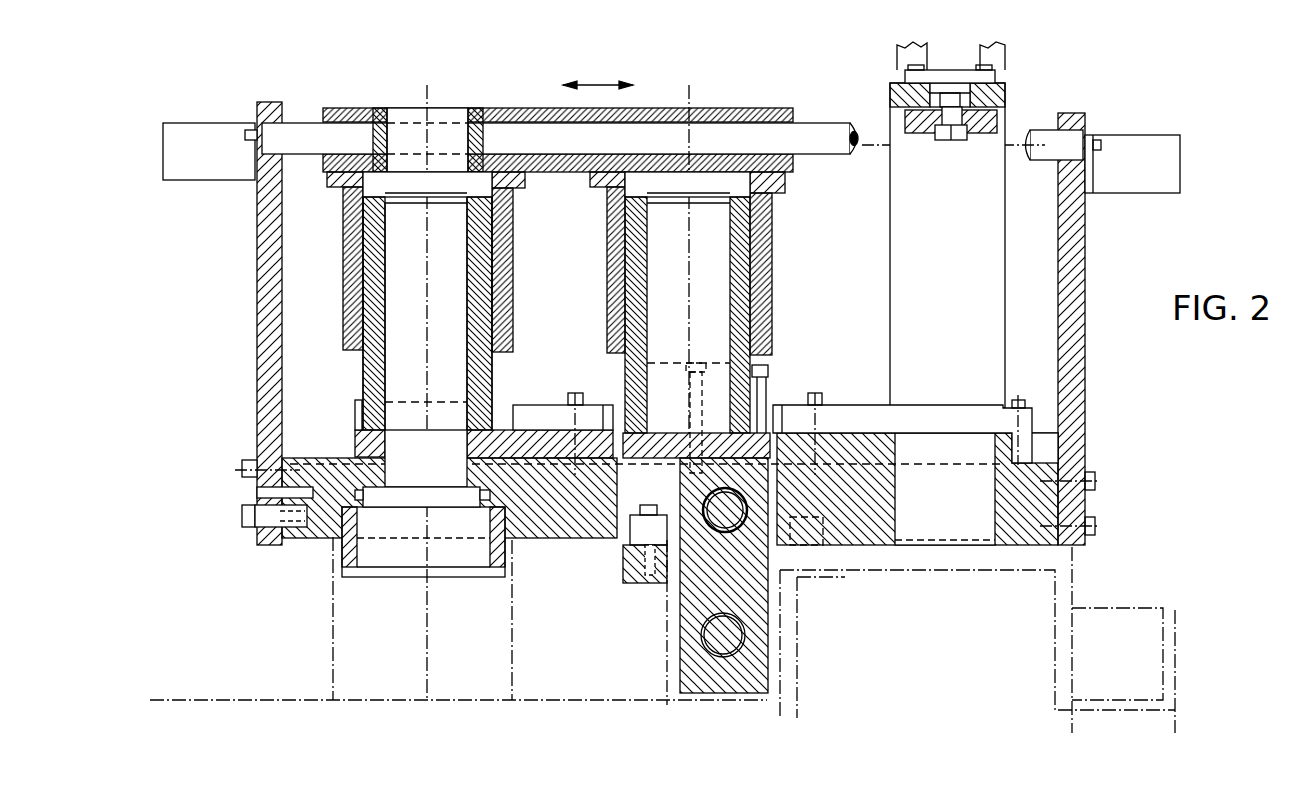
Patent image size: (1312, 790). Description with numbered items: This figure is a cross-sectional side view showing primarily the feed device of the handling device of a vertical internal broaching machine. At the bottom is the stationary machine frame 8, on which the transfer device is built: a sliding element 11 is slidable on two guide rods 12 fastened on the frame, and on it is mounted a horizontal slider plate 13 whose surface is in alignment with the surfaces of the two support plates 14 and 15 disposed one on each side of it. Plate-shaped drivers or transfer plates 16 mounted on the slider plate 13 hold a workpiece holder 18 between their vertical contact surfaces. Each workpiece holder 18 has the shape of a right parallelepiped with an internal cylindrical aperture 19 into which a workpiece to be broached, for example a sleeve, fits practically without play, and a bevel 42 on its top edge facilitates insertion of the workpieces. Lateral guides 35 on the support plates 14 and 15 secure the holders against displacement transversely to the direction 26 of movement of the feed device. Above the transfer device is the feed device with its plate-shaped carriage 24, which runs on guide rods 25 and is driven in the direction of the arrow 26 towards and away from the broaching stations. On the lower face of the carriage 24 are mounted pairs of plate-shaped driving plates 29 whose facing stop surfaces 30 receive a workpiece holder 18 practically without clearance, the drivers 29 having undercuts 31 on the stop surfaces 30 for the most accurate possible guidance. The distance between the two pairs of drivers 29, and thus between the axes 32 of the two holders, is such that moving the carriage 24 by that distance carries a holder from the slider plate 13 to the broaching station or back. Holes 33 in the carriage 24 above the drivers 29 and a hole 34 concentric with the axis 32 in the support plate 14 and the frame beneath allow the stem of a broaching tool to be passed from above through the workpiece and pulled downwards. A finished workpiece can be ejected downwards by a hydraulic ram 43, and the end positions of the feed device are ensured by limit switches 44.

The machine frame 8 is at (268, 262).
The sliding element 11 is at (710, 593).
The guide rods 12 is at (720, 505).
The slider plate 13 is at (662, 440).
The support plate 14 is at (520, 420).
The support plate 15 is at (833, 440).
The transfer plates 16 is at (750, 392).
The workpiece holder 18 is at (372, 377).
The aperture 19 is at (403, 356).
The carriage 24 is at (712, 115).
The guide rods 25 is at (830, 130).
The direction of movement 26 is at (617, 88).
The driving plates 29 is at (345, 292).
The stop surfaces 30 is at (368, 178).
The undercuts 31 is at (357, 258).
The axis 32 is at (427, 98).
The hole 33 is at (468, 135).
The hole 34 is at (385, 440).
The lateral guides 35 is at (558, 417).
The bevel 42 is at (490, 178).
The hydraulic ram 43 is at (993, 101).
The limit switches 44 is at (200, 130).